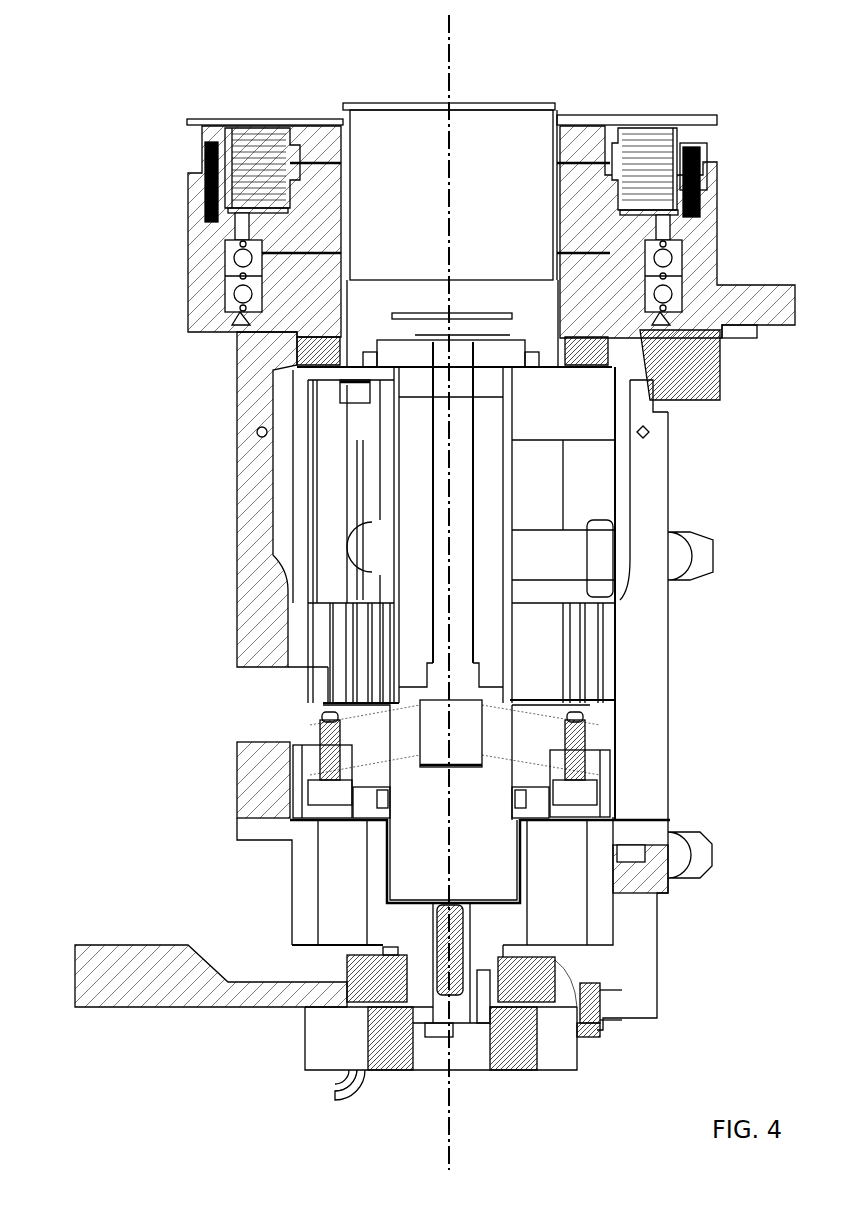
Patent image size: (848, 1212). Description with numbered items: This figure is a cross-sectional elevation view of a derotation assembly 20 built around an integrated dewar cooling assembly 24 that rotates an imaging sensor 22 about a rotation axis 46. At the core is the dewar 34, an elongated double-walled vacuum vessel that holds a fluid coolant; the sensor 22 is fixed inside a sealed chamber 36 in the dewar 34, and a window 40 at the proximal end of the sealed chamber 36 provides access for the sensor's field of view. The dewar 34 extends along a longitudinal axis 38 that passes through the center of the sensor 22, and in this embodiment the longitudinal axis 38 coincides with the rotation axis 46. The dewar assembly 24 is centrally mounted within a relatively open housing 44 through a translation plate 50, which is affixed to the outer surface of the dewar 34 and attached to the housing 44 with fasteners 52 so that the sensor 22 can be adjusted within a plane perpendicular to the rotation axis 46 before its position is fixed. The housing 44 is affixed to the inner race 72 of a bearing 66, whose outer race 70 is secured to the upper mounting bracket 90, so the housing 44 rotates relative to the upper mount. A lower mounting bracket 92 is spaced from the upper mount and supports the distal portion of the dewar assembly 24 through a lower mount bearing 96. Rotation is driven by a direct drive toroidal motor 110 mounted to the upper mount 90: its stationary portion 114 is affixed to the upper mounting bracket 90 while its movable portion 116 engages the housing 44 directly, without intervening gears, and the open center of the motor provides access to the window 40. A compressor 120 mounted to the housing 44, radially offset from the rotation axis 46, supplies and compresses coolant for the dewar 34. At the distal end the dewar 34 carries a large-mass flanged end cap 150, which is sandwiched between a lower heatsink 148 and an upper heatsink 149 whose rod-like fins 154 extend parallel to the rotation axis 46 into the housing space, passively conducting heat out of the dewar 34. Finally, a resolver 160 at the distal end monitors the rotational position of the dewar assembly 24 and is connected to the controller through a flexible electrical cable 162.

The derotation assembly 20 is at (118, 90).
The imaging sensor 22 is at (466, 309).
The integrated dewar cooling assembly 24 is at (516, 640).
The dewar 34 is at (512, 466).
The sealed chamber 36 is at (400, 192).
The longitudinal axis 38 is at (447, 1163).
The window 40 is at (492, 101).
The housing 44 is at (250, 527).
The rotation axis 46 is at (451, 1105).
The translation plate 50 is at (340, 370).
The fasteners 52 is at (352, 405).
The bearing 66 is at (240, 258).
The outer race 70 is at (240, 292).
The inner race 72 is at (312, 350).
The upper mounting bracket 90 is at (705, 242).
The lower mounting bracket 92 is at (163, 1000).
The lower mount bearing 96 is at (380, 975).
The motor 110 is at (223, 102).
The stationary portion 114 is at (262, 152).
The movable portion 116 is at (300, 222).
The compressor 120 is at (630, 962).
The lower heatsink 148 is at (340, 690).
The upper heatsink 149 is at (305, 883).
The end cap 150 is at (512, 734).
The rod-like fins 154 is at (348, 637).
The resolver 160 is at (582, 1052).
The flexible electrical cable 162 is at (348, 1099).